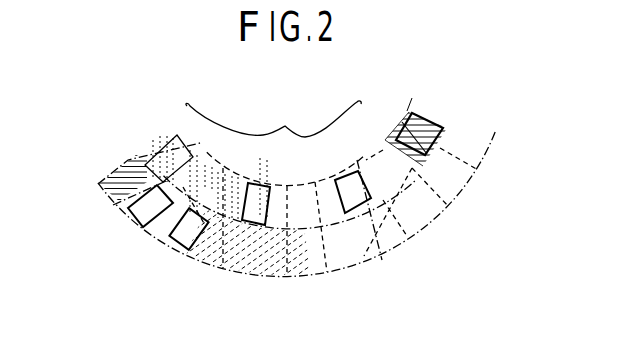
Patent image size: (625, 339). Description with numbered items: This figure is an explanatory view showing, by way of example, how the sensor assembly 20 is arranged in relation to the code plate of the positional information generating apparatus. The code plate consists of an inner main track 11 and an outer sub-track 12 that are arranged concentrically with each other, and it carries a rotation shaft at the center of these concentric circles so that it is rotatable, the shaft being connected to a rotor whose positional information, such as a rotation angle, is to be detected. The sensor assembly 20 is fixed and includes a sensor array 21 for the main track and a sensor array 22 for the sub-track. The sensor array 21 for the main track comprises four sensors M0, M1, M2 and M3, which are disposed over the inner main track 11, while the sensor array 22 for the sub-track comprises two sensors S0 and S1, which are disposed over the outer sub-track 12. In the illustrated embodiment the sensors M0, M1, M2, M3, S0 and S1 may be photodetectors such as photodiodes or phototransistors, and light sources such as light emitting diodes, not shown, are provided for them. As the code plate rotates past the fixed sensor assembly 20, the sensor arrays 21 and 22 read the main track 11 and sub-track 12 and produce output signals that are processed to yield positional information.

The main track 11 is at (438, 112).
The sub-track 12 is at (489, 150).
The sensor assembly 20 is at (323, 104).
The sensor array for the main track 21 is at (273, 112).
The sensor array for the sub-track 22 is at (141, 296).
The sensor M0 is at (182, 143).
The sensor M1 is at (259, 184).
The sensor M2 is at (341, 176).
The sensor M3 is at (402, 130).
The sensor S0 is at (131, 222).
The sensor S1 is at (177, 248).